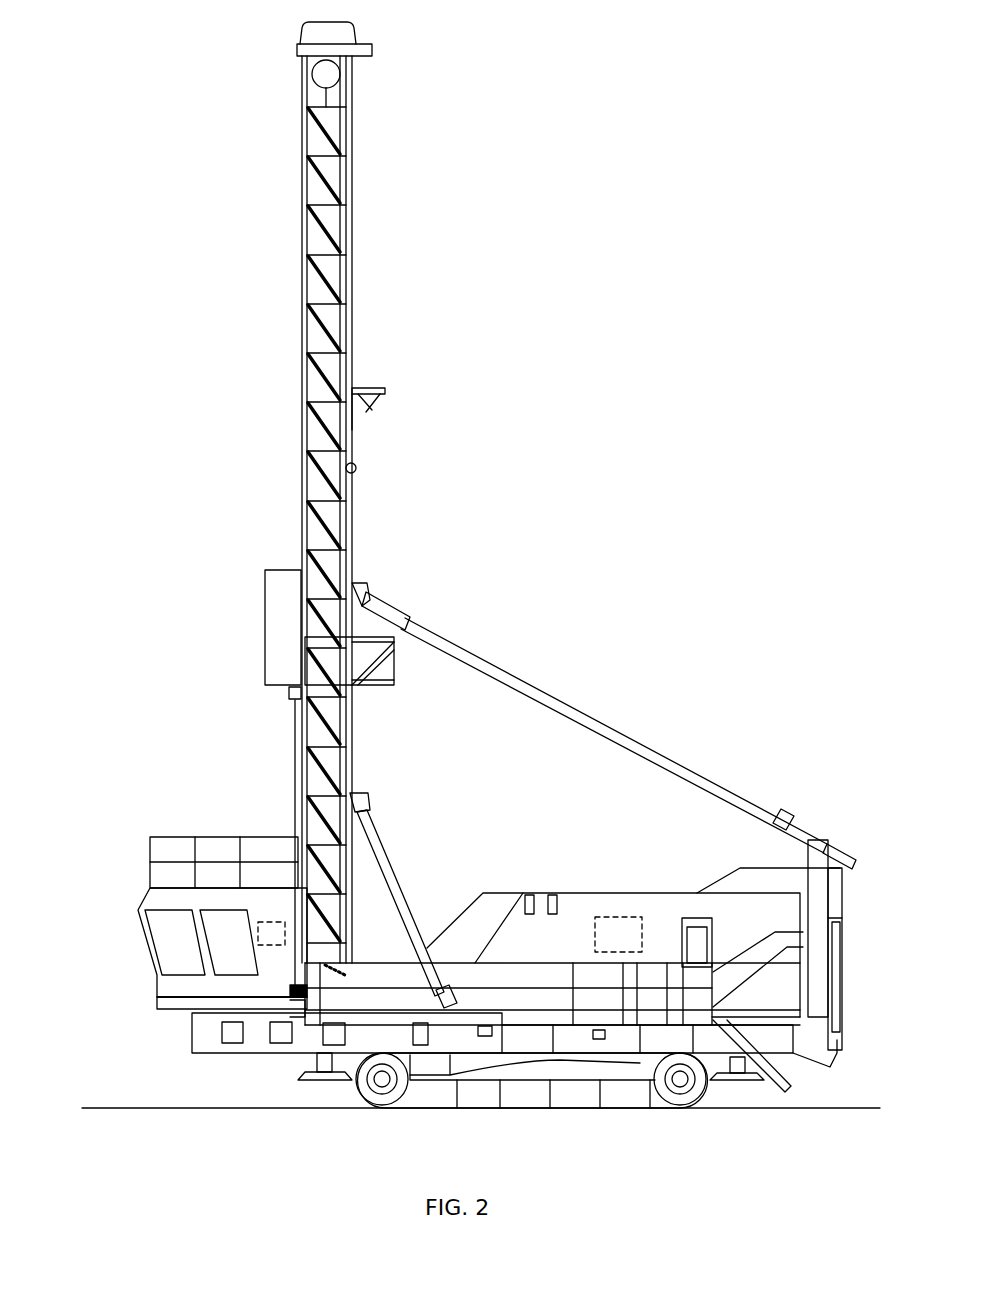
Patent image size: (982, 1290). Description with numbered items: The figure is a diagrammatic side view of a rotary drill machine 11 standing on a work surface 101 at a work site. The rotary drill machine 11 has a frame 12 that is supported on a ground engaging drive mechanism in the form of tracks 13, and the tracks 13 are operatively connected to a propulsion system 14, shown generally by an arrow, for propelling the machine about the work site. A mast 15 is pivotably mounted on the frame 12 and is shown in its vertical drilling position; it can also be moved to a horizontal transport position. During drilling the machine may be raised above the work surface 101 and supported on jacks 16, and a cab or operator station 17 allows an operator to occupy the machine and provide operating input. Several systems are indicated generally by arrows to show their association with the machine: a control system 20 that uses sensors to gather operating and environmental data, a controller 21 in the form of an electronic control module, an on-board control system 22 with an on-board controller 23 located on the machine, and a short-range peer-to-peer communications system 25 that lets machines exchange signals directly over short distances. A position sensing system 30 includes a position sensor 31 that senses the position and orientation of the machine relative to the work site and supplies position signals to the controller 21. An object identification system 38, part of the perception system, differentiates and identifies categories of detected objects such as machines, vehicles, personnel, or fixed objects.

The work surface 101 is at (155, 1108).
The rotary drill machine 11 is at (459, 588).
The frame 12 is at (203, 1030).
The tracks 13 is at (372, 1095).
The propulsion system 14 is at (540, 862).
The mast 15 is at (300, 358).
The jacks 16 is at (318, 1082).
The cab or operator station 17 is at (140, 897).
The control system 20 is at (542, 618).
The controller 21 is at (600, 635).
The on-board control system 22 is at (664, 646).
The on-board controller 23 is at (268, 922).
The peer-to-peer communications system 25 is at (715, 671).
The position sensing system 30 is at (774, 693).
The position sensor 31 is at (620, 917).
The object identification system 38 is at (834, 728).